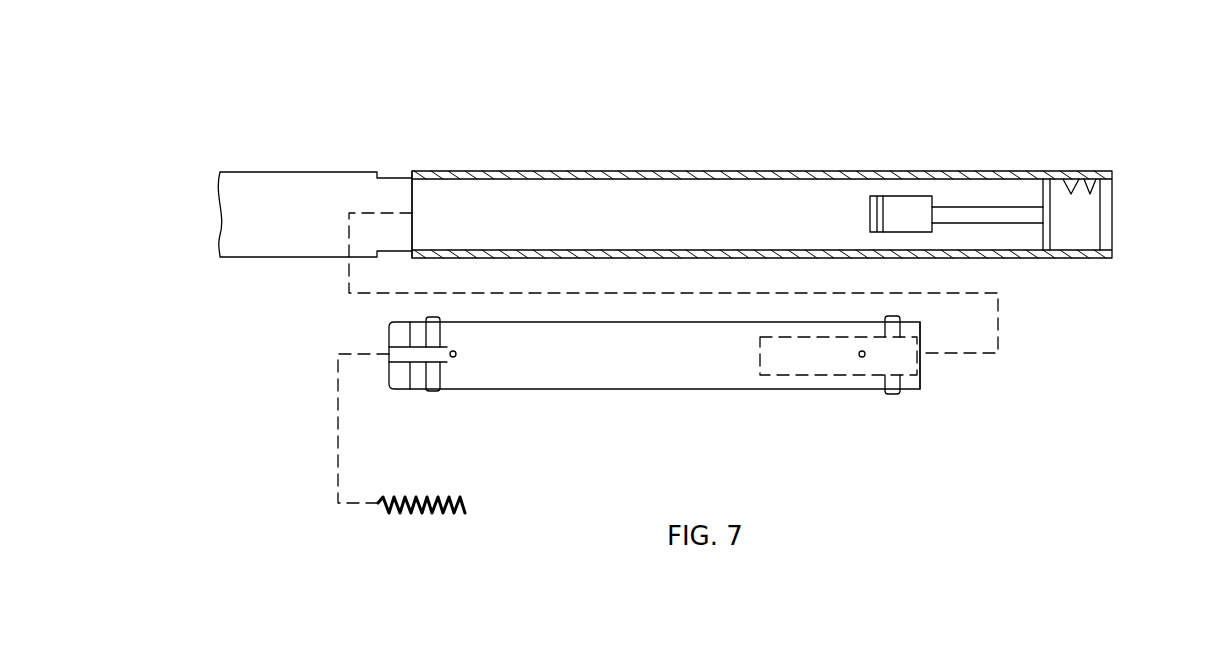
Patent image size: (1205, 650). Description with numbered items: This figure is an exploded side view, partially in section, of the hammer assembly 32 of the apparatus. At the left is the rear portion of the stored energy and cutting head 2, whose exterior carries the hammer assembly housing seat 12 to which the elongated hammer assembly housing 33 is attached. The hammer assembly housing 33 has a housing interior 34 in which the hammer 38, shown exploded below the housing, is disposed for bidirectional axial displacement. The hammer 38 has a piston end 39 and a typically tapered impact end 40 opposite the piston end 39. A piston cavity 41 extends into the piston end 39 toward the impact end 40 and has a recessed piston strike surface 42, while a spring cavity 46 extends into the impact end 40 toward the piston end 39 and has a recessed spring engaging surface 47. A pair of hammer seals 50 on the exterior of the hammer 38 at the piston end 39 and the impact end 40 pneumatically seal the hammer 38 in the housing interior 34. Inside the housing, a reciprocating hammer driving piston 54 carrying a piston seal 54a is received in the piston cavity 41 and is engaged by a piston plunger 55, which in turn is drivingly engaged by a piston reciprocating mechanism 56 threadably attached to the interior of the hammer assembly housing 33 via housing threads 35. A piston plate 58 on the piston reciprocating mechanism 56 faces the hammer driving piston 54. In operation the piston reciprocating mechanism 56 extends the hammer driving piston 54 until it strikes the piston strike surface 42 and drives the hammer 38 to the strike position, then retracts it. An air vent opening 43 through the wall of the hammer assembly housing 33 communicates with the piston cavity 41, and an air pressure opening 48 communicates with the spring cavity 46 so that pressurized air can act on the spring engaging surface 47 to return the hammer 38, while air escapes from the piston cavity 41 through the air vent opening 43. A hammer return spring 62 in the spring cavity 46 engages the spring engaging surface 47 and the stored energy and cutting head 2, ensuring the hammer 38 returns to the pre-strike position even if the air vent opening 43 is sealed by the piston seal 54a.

The stored energy and cutting head 2 is at (297, 170).
The hammer assembly housing seat 12 is at (395, 178).
The hammer assembly 32 is at (762, 157).
The hammer assembly housing 33 is at (718, 170).
The housing interior 34 is at (738, 232).
The housing threads 35 is at (1072, 188).
The hammer 38 is at (647, 390).
The piston end 39 is at (925, 386).
The impact end 40 is at (388, 365).
The piston cavity 41 is at (922, 362).
The piston strike surface 42 is at (763, 352).
The air vent opening 43 is at (862, 357).
The spring cavity 46 is at (388, 352).
The spring engaging surface 47 is at (456, 347).
The air pressure opening 48 is at (458, 360).
The hammer seals 50 is at (433, 382).
The hammer driving piston 54 is at (898, 202).
The piston seal 54a is at (870, 208).
The piston plunger 55 is at (968, 207).
The piston reciprocating mechanism 56 is at (1085, 235).
The piston plate 58 is at (1046, 238).
The hammer return spring 62 is at (462, 500).